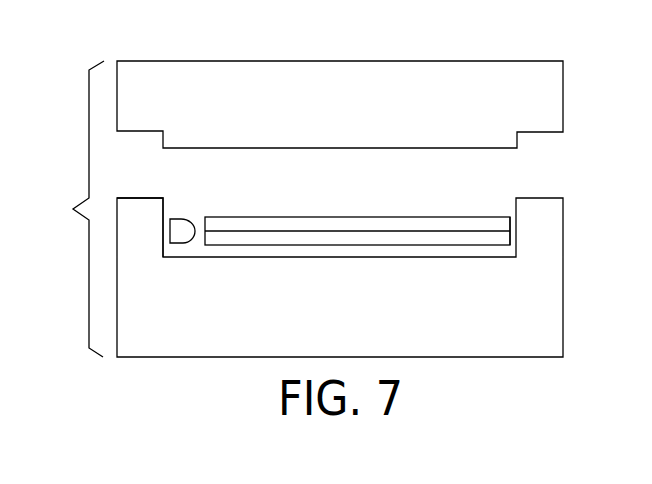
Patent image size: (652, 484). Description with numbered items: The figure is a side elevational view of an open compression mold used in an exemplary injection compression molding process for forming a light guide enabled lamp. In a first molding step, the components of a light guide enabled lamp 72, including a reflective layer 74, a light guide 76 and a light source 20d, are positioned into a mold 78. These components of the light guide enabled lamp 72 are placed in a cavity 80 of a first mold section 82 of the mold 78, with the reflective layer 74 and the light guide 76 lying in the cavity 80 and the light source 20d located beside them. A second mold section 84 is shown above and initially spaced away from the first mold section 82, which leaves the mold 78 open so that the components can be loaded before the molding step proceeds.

The second mold section 84 is at (518, 83).
The first mold section 82 is at (535, 300).
The cavity 80 is at (166, 210).
The light source 20d is at (180, 232).
The reflective layer 74 is at (270, 224).
The light guide 76 is at (350, 240).
The light guide enabled lamp 72 is at (512, 236).
The mold 78 is at (74, 209).